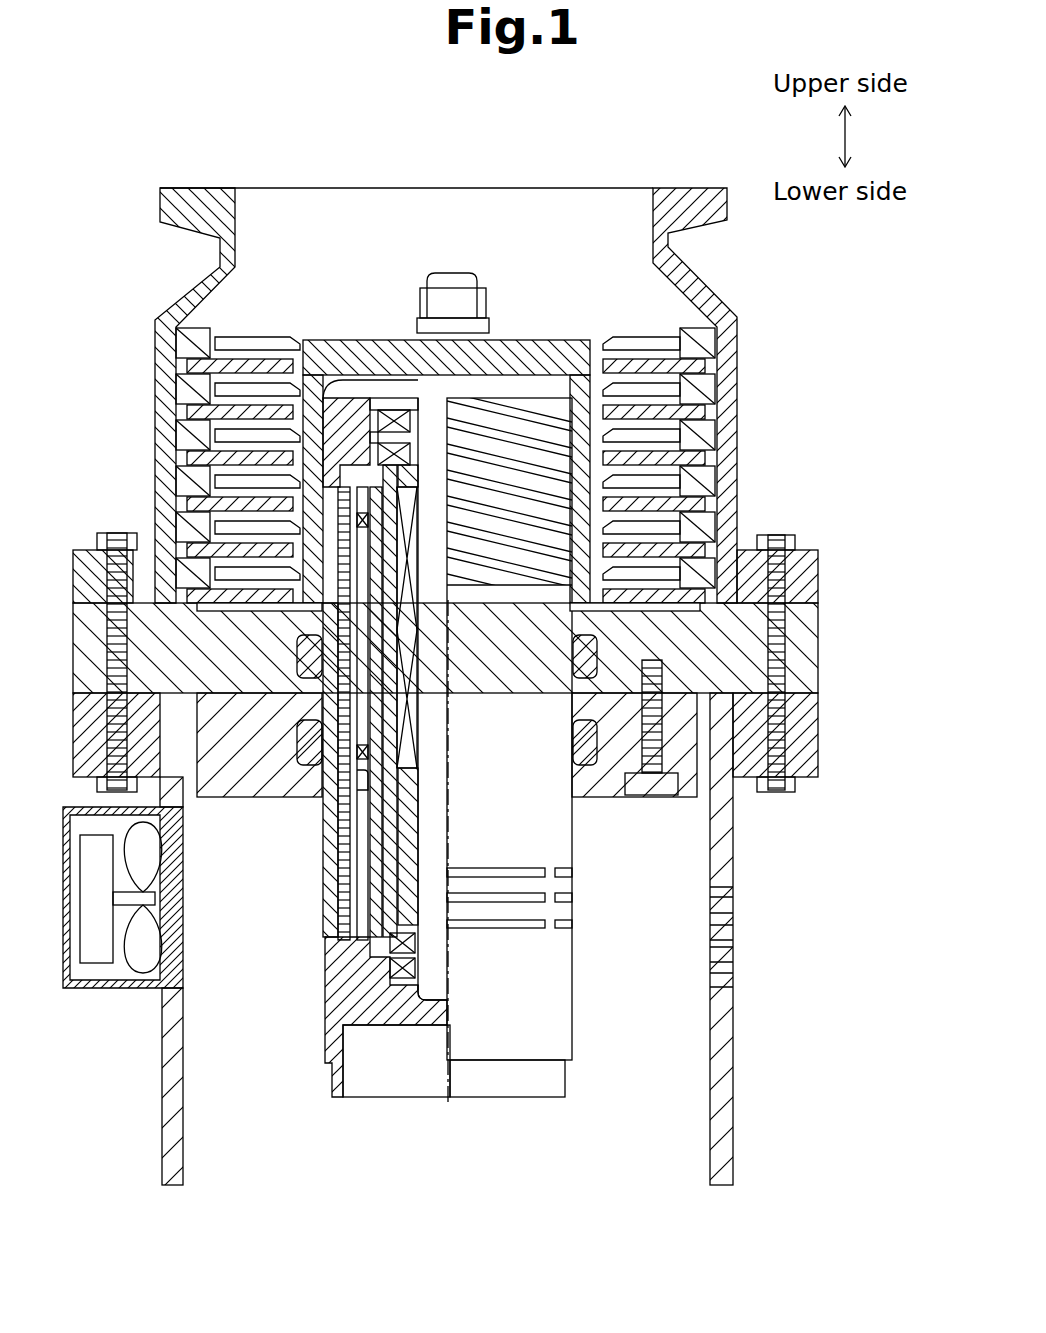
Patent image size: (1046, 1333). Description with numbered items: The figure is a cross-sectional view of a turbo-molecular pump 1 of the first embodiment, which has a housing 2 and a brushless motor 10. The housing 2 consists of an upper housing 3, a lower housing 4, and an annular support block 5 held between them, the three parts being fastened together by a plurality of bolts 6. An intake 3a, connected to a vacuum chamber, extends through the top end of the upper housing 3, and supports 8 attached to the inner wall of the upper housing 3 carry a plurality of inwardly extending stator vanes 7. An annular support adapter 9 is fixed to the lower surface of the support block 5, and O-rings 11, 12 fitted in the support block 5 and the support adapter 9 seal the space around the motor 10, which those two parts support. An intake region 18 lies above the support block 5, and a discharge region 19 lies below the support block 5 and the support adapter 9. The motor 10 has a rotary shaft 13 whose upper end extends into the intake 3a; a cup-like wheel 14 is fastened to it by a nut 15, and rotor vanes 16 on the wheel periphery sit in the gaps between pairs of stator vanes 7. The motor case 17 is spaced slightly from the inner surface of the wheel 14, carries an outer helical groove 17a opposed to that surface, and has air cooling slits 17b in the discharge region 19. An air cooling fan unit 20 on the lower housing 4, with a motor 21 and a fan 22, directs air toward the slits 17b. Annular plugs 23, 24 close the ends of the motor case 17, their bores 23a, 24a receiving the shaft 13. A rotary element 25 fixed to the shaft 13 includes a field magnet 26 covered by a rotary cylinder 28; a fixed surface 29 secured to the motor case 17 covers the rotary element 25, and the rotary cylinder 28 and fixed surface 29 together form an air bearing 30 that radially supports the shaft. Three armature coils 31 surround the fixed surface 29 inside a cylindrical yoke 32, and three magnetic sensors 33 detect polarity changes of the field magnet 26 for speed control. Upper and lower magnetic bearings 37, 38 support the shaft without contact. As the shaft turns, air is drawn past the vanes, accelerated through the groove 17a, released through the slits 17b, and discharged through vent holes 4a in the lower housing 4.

The turbo-molecular pump 1 is at (256, 170).
The housing 2 is at (737, 300).
The upper housing 3 is at (165, 430).
The intake 3a is at (653, 188).
The lower housing 4 is at (475, 939).
The vent holes 4a is at (735, 915).
The support block 5 is at (150, 700).
The bolts 6 is at (110, 535).
The stator vanes 7 is at (190, 366).
The supports 8 is at (712, 367).
The support adapter 9 is at (238, 800).
The brushless motor 10 is at (549, 1100).
The O-ring 11 is at (572, 655).
The O-ring 12 is at (572, 745).
The rotary shaft 13 is at (503, 338).
The wheel 14 is at (545, 338).
The nut 15 is at (466, 278).
The rotor vanes 16 is at (262, 385).
The motor case 17 is at (451, 748).
The outer helical groove 17a is at (528, 565).
The air cooling slits 17b is at (498, 860).
The intake region 18 is at (320, 277).
The discharge region 19 is at (250, 1105).
The air cooling fan unit 20 is at (87, 995).
The motor 21 is at (111, 968).
The fan 22 is at (160, 955).
The upper plug 23 is at (340, 398).
The upper bore 23a is at (430, 396).
The lower plug 24 is at (395, 1040).
The lower bore 24a is at (430, 1008).
The rotary element 25 is at (390, 838).
The field magnet 26 is at (412, 650).
The rotary cylinder 28 is at (412, 782).
The fixed surface 29 is at (375, 905).
The air bearing 30 is at (368, 874).
The armature coils 31 is at (300, 640).
The yoke 32 is at (300, 720).
The magnetic sensors 33 is at (344, 790).
The upper magnetic bearing 37 is at (390, 408).
The lower magnetic bearing 38 is at (401, 982).